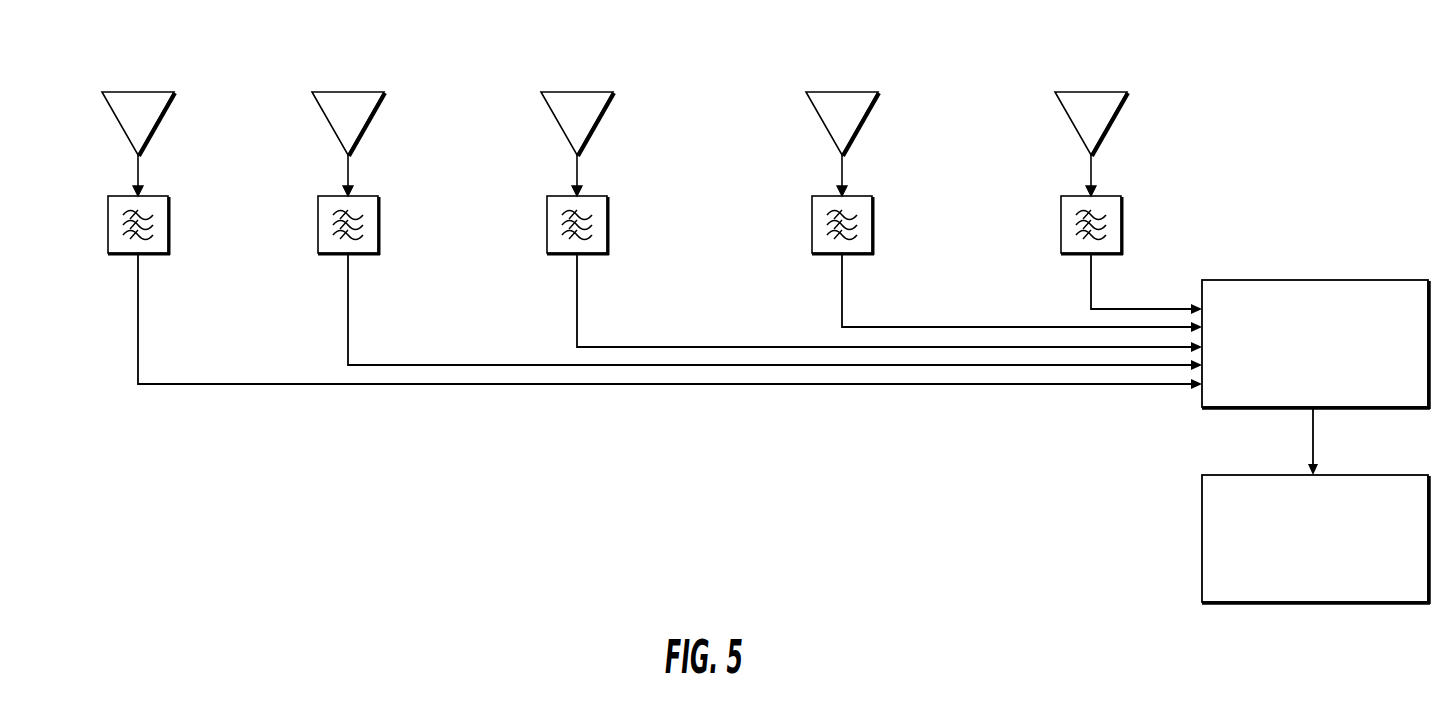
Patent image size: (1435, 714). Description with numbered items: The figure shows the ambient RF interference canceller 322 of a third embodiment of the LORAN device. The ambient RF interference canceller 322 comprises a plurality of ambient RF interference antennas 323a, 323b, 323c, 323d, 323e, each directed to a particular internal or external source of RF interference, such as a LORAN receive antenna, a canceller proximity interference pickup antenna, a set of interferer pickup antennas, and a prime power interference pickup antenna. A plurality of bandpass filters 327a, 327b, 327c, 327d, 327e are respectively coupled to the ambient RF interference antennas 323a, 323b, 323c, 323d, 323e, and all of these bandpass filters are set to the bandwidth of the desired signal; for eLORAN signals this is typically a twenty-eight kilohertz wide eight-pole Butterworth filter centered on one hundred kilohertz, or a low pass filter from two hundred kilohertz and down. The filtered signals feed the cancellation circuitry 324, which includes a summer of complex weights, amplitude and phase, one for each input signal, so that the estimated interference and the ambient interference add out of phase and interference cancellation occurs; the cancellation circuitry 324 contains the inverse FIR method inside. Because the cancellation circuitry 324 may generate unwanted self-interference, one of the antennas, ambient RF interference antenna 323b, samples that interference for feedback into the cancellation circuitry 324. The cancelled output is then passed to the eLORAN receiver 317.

The ambient RF interference canceller 322 is at (1196, 100).
The ambient RF interference antenna 323a is at (162, 92).
The ambient RF interference antenna 323b is at (374, 105).
The ambient RF interference antenna 323c is at (603, 105).
The ambient RF interference antenna 323d is at (868, 105).
The ambient RF interference antenna 323e is at (1117, 105).
The bandpass filter 327a is at (153, 210).
The bandpass filter 327b is at (387, 209).
The bandpass filter 327c is at (616, 209).
The bandpass filter 327d is at (881, 209).
The bandpass filter 327e is at (1130, 209).
The cancellation circuitry 324 is at (1396, 350).
The eLORAN receiver 317 is at (1404, 550).